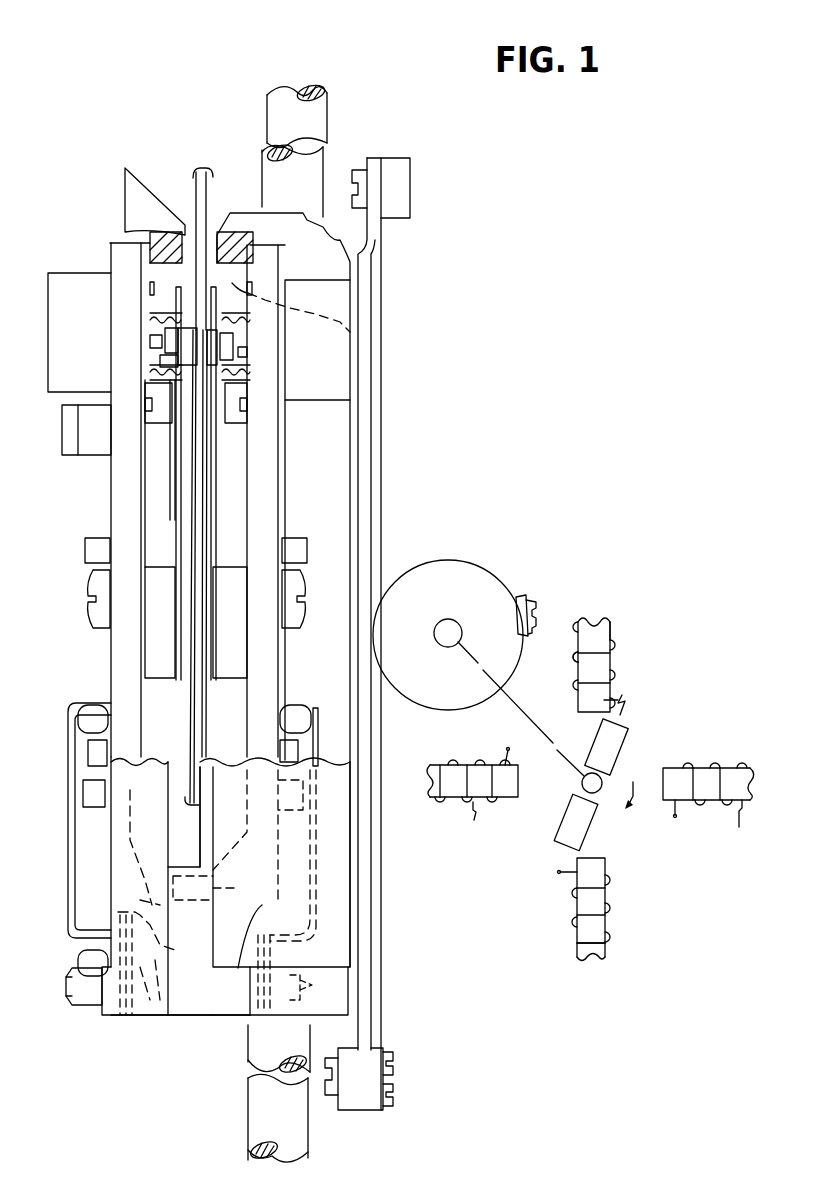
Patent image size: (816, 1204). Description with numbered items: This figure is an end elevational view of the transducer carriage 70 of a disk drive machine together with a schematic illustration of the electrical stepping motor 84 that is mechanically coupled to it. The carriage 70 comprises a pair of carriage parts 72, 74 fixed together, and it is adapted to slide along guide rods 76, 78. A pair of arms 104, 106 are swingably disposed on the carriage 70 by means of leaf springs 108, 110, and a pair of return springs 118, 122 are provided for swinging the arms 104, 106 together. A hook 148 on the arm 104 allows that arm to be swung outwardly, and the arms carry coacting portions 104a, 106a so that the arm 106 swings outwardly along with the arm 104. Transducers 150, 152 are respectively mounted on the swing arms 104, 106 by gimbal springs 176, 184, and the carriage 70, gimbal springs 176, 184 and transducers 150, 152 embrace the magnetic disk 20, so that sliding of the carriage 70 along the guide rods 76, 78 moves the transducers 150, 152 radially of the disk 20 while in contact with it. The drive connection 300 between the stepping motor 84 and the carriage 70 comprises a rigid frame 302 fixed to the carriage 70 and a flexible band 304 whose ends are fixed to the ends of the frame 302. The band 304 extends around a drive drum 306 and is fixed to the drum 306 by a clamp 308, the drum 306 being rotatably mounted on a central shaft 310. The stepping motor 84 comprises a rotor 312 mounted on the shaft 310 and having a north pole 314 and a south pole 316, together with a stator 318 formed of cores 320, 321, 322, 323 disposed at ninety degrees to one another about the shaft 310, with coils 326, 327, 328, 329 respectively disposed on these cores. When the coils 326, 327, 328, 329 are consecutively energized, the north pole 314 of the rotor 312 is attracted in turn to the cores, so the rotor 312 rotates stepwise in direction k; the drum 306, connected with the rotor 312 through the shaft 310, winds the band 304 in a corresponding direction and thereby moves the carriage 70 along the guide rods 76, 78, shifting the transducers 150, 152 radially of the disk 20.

The magnetic disk 20 is at (208, 214).
The transducer carriage 70 is at (193, 1018).
The carriage part 72 is at (134, 1018).
The carriage part 74 is at (222, 1018).
The guide rod 76 is at (300, 133).
The guide rod 78 is at (300, 199).
The electrical stepping motor 84 is at (614, 732).
The arm 104 is at (110, 662).
The coacting portion 104a is at (159, 886).
The arm 106 is at (285, 662).
The coacting portion 106a is at (261, 884).
The leaf spring 108 is at (150, 1018).
The leaf spring 110 is at (225, 991).
The return spring 118 is at (68, 832).
The return spring 122 is at (320, 733).
The hook 148 is at (62, 432).
The transducer 150 is at (190, 350).
The transducer 152 is at (207, 352).
The gimbal spring 176 is at (176, 540).
The gimbal spring 184 is at (214, 542).
The drive connection 300 is at (410, 346).
The rigid frame 302 is at (387, 244).
The flexible band 304 is at (387, 272).
The drive drum 306 is at (448, 557).
The clamp 308 is at (518, 592).
The central shaft 310 is at (441, 625).
The rotor 312 is at (629, 758).
The north pole 314 is at (628, 723).
The south pole 316 is at (558, 828).
The stator 318 is at (588, 618).
The core 320 is at (610, 628).
The core 321 is at (741, 828).
The core 322 is at (578, 941).
The core 323 is at (448, 766).
The coil 326 is at (576, 688).
The coil 327 is at (714, 762).
The coil 328 is at (607, 910).
The coil 329 is at (475, 826).